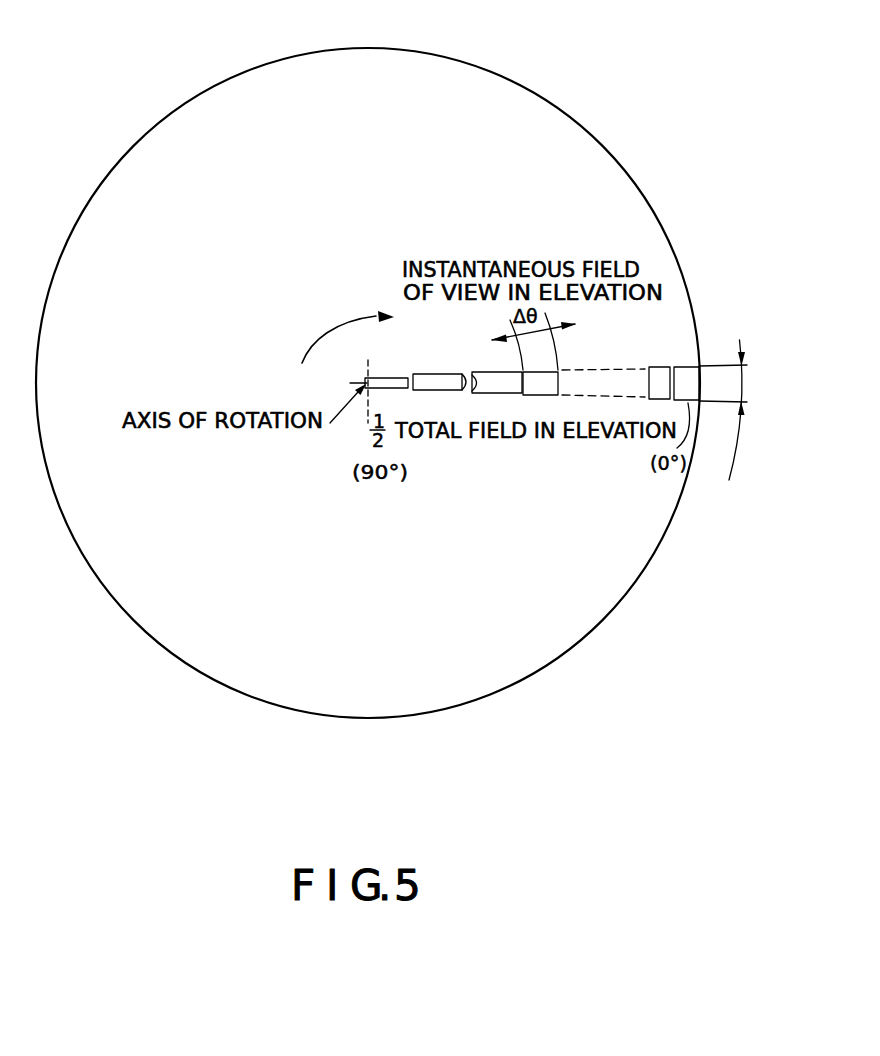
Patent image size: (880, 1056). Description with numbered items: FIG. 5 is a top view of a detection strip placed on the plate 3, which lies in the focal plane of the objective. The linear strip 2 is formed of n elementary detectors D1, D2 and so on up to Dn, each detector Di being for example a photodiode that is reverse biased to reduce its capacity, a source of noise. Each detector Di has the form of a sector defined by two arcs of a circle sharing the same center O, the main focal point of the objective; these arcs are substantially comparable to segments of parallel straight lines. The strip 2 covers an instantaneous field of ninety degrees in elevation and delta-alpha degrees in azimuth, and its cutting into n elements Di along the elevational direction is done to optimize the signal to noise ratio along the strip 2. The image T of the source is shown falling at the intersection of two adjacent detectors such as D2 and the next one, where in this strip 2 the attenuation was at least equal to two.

The plate 3 is at (287, 66).
The linear strip 2 is at (622, 538).
The center O is at (352, 390).
The elementary detector D1 is at (386, 377).
The elementary detector D2 is at (436, 374).
The image of the source T is at (468, 364).
The detector element Di is at (545, 392).
The elementary detector Dn is at (663, 370).